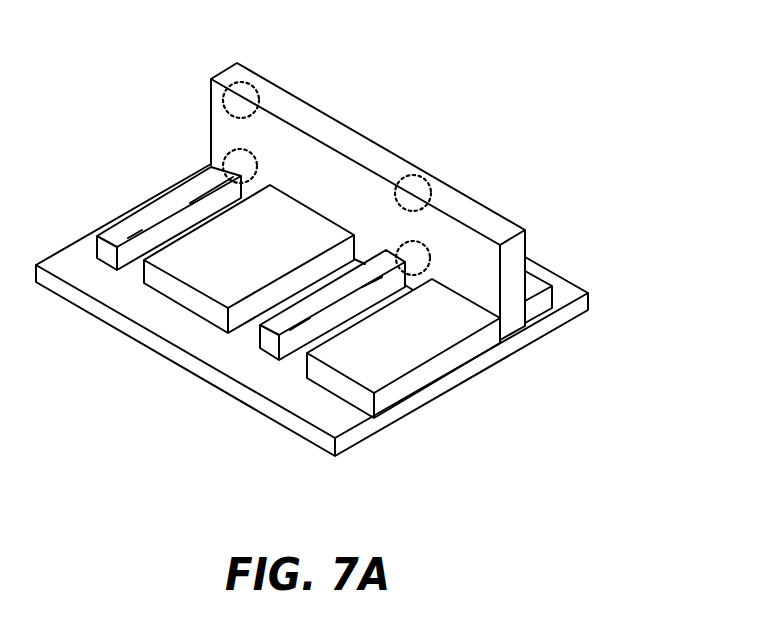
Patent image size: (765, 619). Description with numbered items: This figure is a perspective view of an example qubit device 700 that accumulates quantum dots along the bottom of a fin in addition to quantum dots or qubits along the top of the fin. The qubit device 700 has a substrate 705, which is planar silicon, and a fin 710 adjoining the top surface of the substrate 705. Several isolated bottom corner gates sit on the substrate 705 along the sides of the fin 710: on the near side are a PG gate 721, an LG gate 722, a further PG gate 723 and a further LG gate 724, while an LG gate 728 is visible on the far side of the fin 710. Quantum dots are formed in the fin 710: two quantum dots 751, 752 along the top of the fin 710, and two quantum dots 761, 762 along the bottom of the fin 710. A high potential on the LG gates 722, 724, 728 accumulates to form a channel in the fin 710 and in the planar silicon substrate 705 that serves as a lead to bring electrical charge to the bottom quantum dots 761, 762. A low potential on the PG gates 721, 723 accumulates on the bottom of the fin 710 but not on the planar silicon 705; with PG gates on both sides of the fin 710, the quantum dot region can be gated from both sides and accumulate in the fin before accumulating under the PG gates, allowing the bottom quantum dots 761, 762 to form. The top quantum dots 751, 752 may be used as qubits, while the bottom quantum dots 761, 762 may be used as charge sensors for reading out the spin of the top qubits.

The qubit device 700 is at (57, 373).
The substrate 705 is at (487, 362).
The fin 710 is at (493, 227).
The bottom corner gate (PG) 721 is at (122, 232).
The bottom corner gate (LG) 722 is at (197, 303).
The bottom corner gate (PG) 723 is at (292, 343).
The bottom corner gate (LG) 724 is at (367, 398).
The bottom corner gate (LG) 728 is at (535, 314).
The top quantum dot 751 is at (243, 90).
The top quantum dot 752 is at (415, 188).
The bottom quantum dot 761 is at (230, 153).
The bottom quantum dot 762 is at (415, 243).